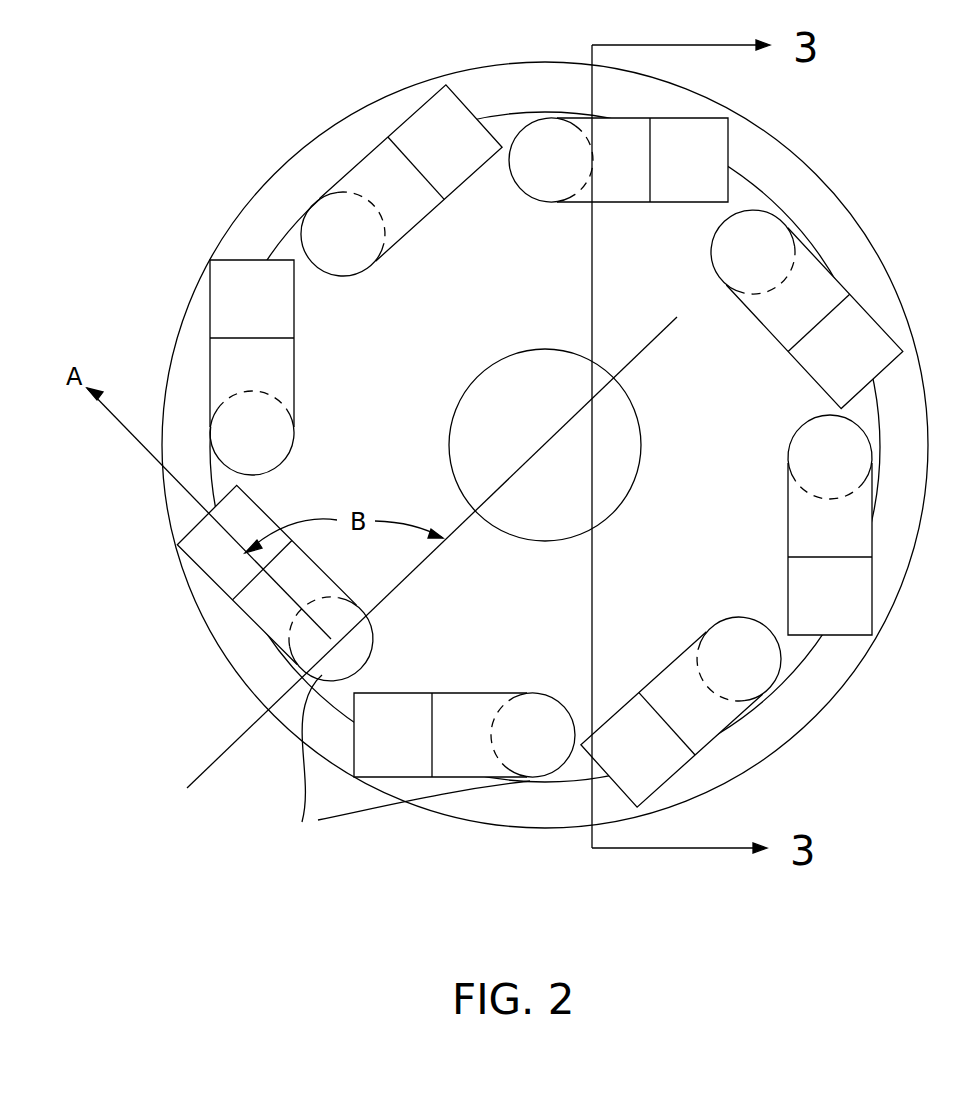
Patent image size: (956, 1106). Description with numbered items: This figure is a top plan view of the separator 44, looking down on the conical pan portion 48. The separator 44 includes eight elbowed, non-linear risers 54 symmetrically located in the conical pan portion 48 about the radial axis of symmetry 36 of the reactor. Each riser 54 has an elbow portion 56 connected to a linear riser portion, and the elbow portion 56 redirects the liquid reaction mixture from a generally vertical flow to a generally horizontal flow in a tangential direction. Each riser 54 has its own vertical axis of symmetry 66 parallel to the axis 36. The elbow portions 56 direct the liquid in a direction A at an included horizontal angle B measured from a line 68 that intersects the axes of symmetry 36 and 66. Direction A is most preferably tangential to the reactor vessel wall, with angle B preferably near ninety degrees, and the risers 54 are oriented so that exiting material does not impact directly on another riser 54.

The radial axis of symmetry 36 is at (553, 452).
The separator 44 is at (287, 130).
The conical pan portion 48 is at (545, 447).
The riser 54 is at (396, 250).
The elbow portion 56 is at (817, 392).
The vertical axis of symmetry 66 is at (404, 767).
The line 68 is at (412, 568).